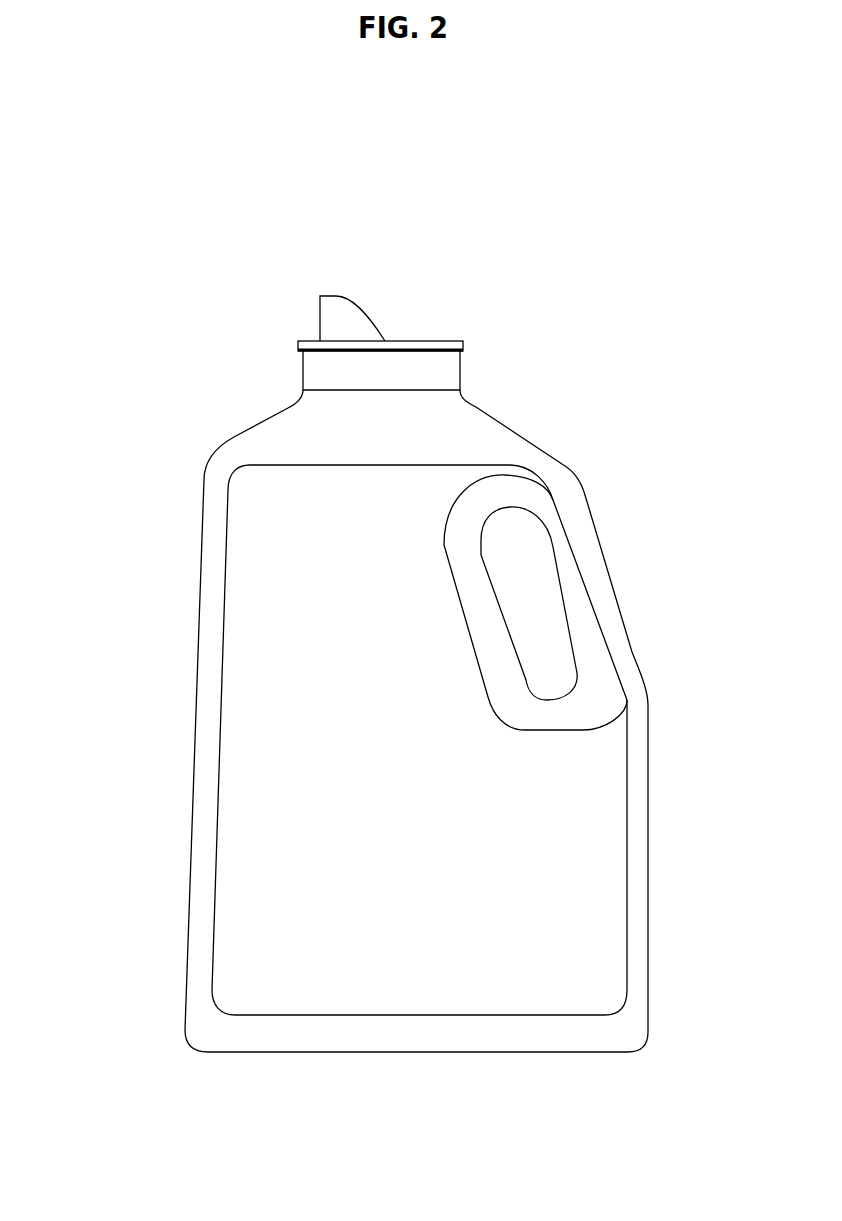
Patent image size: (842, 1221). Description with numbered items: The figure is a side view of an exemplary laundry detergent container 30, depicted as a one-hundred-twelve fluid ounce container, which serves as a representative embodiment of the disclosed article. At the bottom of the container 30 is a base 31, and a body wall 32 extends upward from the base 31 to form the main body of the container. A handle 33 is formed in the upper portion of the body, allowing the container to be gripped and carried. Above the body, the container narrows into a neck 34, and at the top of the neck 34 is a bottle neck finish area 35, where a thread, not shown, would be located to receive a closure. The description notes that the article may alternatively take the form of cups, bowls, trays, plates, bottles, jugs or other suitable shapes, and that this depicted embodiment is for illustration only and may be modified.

The laundry detergent container 30 is at (198, 262).
The base 31 is at (185, 1037).
The body wall 32 is at (582, 866).
The handle 33 is at (570, 593).
The neck 34 is at (468, 393).
The bottle neck finish area 35 is at (299, 343).